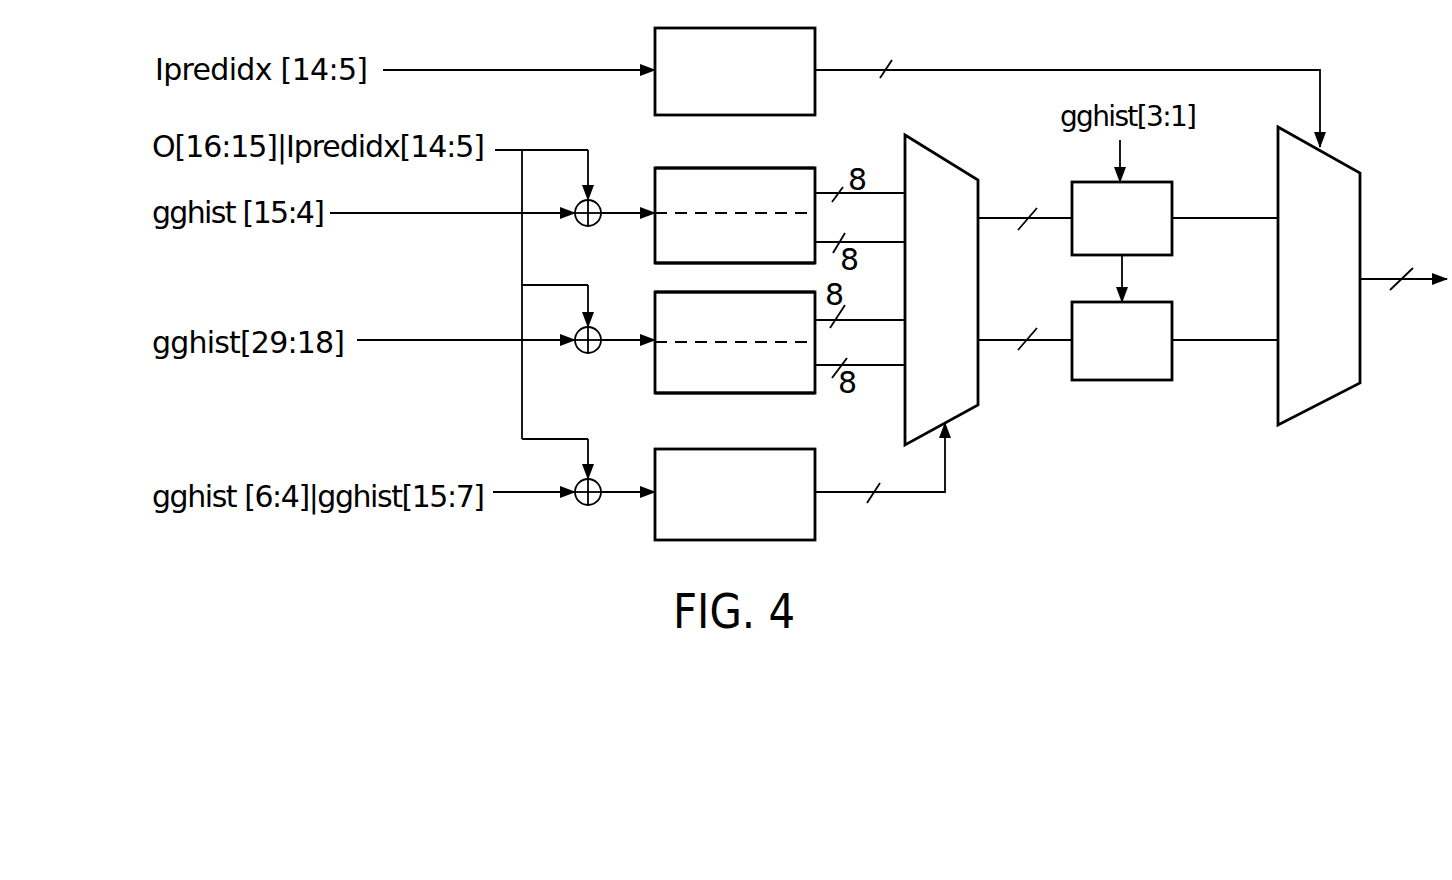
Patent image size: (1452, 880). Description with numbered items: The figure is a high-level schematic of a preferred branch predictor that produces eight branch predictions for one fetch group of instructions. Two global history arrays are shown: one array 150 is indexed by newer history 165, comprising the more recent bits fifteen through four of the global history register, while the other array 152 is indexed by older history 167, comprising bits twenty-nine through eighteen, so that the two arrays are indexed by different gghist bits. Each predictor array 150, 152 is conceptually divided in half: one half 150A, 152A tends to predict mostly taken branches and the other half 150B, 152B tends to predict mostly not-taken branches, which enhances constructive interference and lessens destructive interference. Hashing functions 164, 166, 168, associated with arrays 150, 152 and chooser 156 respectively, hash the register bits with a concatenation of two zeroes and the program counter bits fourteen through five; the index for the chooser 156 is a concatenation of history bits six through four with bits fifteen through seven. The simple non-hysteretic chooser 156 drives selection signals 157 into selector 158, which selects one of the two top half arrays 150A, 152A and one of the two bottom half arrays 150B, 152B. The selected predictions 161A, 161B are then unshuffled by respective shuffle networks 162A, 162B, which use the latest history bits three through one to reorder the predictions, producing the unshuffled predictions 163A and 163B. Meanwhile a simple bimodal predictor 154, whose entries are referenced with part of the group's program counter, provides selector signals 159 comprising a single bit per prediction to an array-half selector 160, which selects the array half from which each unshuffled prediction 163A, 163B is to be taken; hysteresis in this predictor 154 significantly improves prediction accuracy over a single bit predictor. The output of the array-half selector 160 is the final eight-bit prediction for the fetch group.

The global history array 150 is at (735, 194).
The top half of array 150A is at (777, 212).
The bottom half of array 150B is at (777, 255).
The global history array 152 is at (735, 365).
The top half of array 152A is at (767, 333).
The bottom half of array 152B is at (767, 380).
The bimodal predictor 154 is at (760, 90).
The chooser 156 is at (763, 508).
The selection signals 157 is at (947, 462).
The selector 158 is at (932, 148).
The selector signals 159 is at (1110, 70).
The array-half selector 160 is at (1322, 403).
The selected prediction 161A is at (998, 216).
The selected prediction 161B is at (993, 338).
The shuffle network 162A is at (1147, 240).
The shuffle network 162B is at (1152, 360).
The unshuffled prediction 163A is at (1212, 218).
The unshuffled prediction 163B is at (1213, 340).
The hashing function 164 is at (600, 202).
The newer history 165 is at (265, 237).
The hashing function 166 is at (602, 330).
The older history 167 is at (272, 360).
The hashing function 168 is at (600, 480).